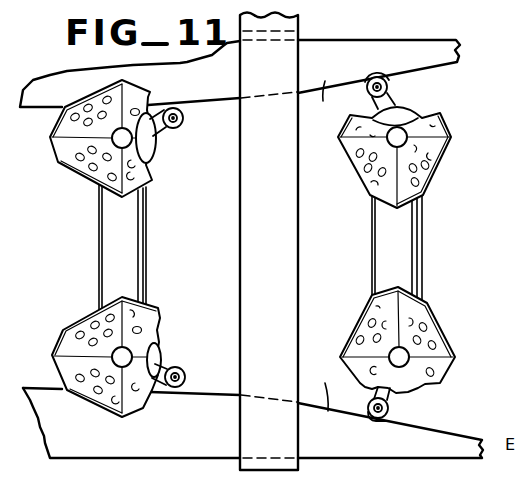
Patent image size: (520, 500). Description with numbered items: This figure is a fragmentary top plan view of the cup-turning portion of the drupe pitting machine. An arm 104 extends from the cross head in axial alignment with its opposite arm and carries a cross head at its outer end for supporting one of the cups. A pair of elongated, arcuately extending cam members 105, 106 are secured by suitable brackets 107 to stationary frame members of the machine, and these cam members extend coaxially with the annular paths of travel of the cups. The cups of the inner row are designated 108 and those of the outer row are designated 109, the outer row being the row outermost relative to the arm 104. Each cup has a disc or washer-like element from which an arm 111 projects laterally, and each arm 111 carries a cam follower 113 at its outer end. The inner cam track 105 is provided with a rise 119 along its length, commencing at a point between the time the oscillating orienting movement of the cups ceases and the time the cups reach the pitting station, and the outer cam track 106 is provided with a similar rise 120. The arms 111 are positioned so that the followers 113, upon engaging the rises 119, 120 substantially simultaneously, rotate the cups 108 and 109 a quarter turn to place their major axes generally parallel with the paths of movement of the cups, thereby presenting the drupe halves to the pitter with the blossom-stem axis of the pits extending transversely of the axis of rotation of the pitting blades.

The arm 104 is at (98, 243).
The cam member 105 is at (432, 60).
The cam member 106 is at (450, 434).
The bracket 107 is at (296, 273).
The cup 108 is at (452, 130).
The cup 109 is at (443, 322).
The arm 111 is at (388, 96).
The cam follower 113 is at (182, 127).
The rise 119 is at (320, 103).
The rise 120 is at (320, 386).